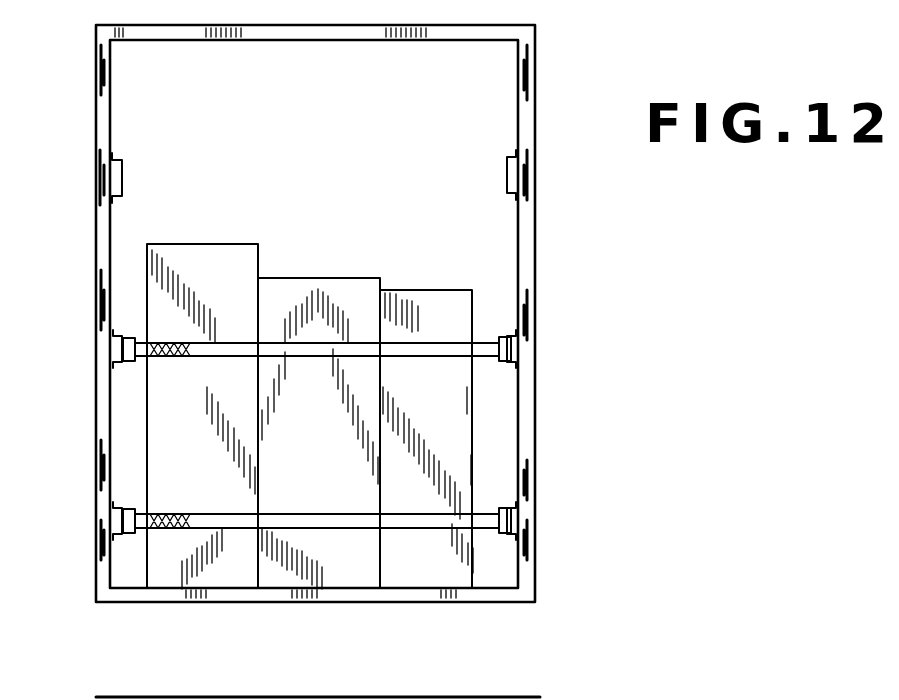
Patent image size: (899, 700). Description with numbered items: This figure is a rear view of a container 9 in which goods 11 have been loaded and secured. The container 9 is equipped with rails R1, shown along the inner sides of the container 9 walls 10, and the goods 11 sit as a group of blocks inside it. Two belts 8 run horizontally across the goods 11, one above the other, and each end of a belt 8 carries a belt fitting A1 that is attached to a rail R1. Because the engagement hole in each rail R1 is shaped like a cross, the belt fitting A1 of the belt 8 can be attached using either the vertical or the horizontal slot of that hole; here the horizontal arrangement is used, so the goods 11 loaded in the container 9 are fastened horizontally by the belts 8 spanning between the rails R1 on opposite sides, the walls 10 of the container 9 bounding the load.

The container 9 is at (542, 102).
The side wall of frame 10 is at (100, 268).
The goods 11 is at (318, 300).
The belt 8 is at (322, 352).
The rail R1 is at (125, 187).
The belt fitting A1 is at (130, 362).